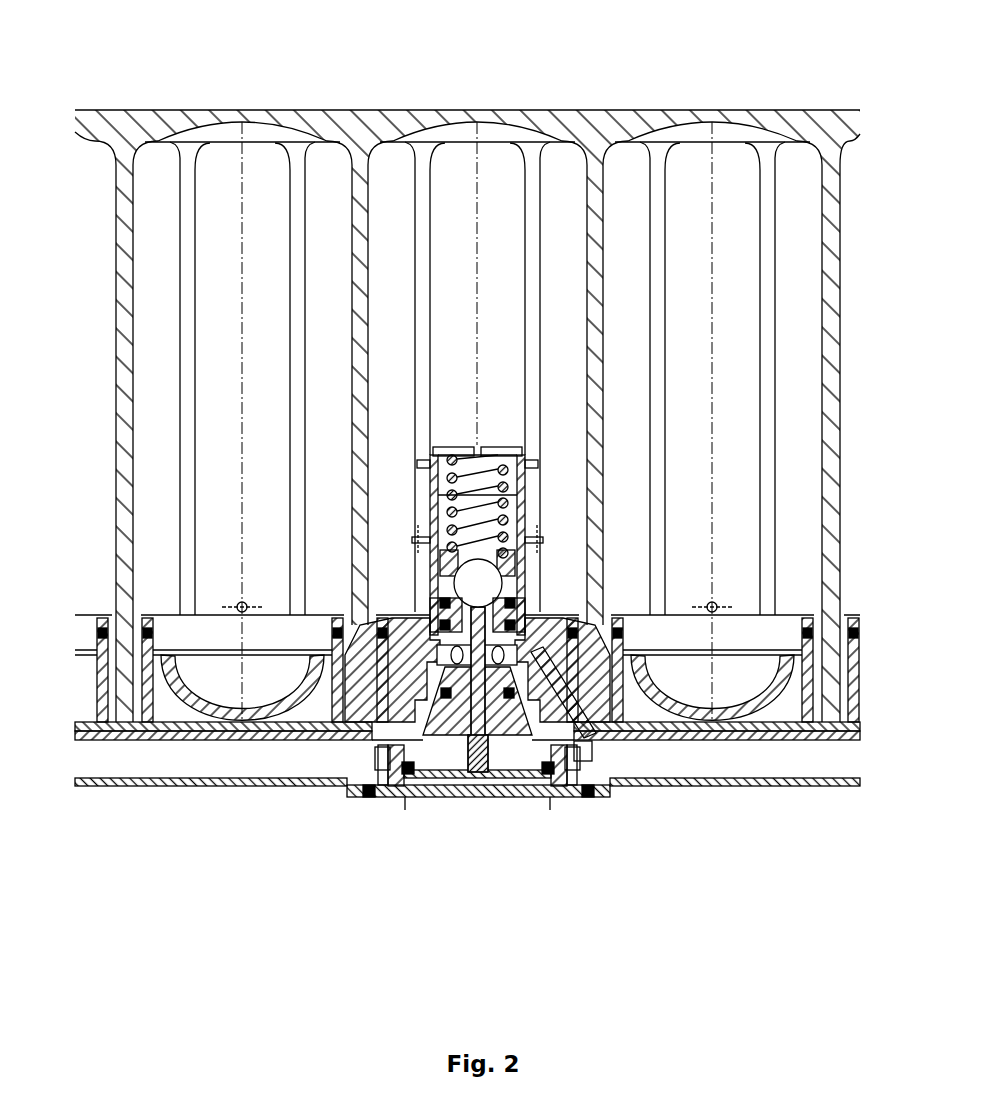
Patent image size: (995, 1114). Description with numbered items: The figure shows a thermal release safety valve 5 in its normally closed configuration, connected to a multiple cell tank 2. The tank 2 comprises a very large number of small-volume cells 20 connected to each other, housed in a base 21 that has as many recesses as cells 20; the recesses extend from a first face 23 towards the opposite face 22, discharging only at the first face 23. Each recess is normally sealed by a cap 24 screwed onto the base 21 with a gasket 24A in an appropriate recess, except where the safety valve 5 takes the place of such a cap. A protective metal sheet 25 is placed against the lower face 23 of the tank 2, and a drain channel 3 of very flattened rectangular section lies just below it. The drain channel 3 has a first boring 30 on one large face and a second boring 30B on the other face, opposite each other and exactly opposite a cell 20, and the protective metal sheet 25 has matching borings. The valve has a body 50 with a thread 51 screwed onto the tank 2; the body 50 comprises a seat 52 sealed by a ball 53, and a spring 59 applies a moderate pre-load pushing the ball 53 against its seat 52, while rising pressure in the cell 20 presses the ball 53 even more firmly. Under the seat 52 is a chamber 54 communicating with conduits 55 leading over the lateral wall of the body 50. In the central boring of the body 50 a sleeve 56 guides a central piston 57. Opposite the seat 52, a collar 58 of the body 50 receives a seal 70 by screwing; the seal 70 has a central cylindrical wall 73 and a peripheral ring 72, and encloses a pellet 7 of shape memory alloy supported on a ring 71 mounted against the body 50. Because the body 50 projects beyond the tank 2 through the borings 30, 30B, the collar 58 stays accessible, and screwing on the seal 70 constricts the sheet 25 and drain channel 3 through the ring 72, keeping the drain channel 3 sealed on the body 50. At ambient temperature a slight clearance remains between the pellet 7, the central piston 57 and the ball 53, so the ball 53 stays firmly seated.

The tank 2 is at (233, 88).
The cell 20 is at (252, 190).
The base 21 is at (128, 130).
The opposite face 22 is at (810, 108).
The first face 23 is at (122, 724).
The cap 24 is at (180, 717).
The gasket 24A is at (198, 717).
The protective metal sheet 25 is at (737, 741).
The drain channel 3 is at (690, 787).
The first boring 30 is at (580, 741).
The second boring 30B is at (380, 795).
The thermal release safety valve 5 is at (393, 843).
The body 50 is at (580, 675).
The thread 51 is at (581, 698).
The seat 52 is at (538, 533).
The ball 53 is at (487, 578).
The chamber 54 is at (435, 540).
The conduit 55 is at (418, 668).
The sleeve 56 is at (452, 730).
The central piston 57 is at (493, 767).
The collar 58 is at (367, 787).
The spring 59 is at (515, 470).
The pellet 7 is at (472, 780).
The seal 70 is at (563, 765).
The ring 71 is at (405, 760).
The peripheral ring 72 is at (375, 793).
The central cylindrical wall 73 is at (470, 775).